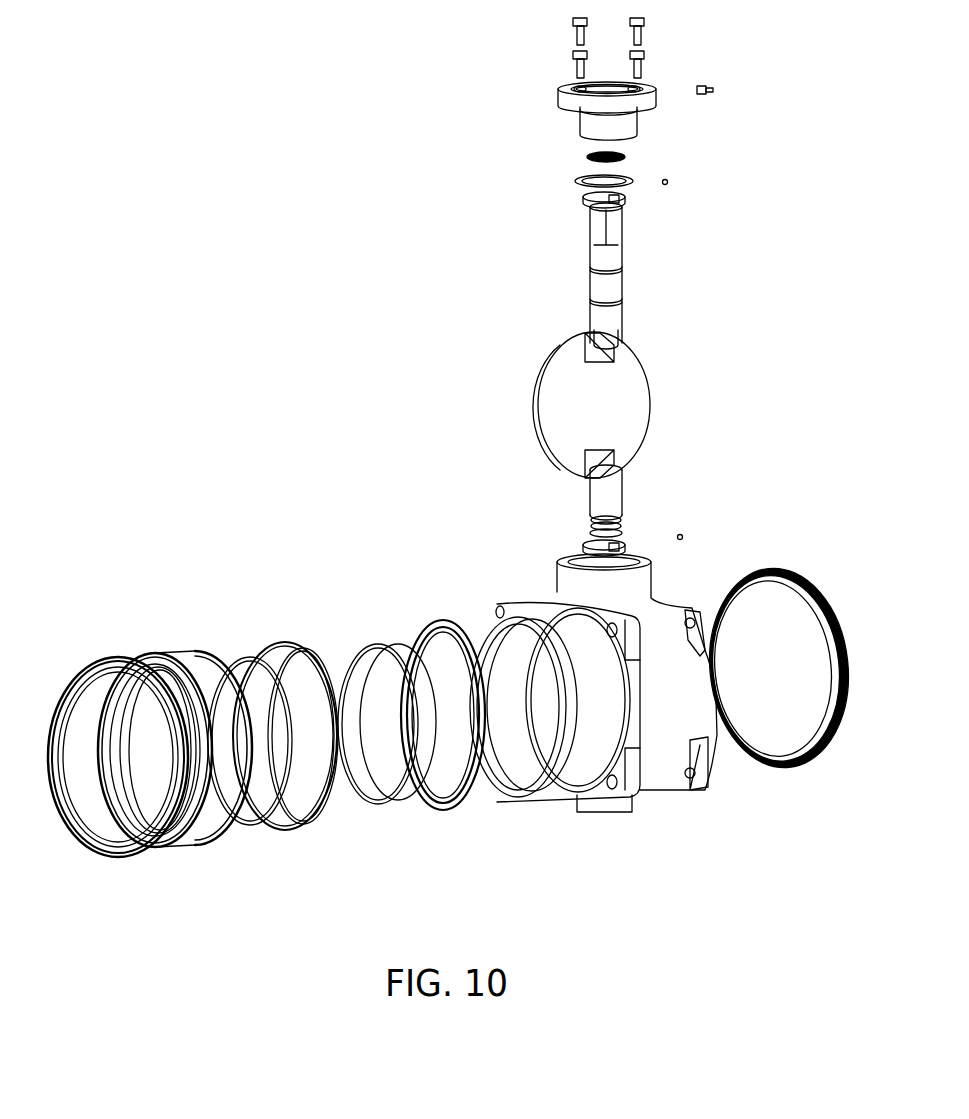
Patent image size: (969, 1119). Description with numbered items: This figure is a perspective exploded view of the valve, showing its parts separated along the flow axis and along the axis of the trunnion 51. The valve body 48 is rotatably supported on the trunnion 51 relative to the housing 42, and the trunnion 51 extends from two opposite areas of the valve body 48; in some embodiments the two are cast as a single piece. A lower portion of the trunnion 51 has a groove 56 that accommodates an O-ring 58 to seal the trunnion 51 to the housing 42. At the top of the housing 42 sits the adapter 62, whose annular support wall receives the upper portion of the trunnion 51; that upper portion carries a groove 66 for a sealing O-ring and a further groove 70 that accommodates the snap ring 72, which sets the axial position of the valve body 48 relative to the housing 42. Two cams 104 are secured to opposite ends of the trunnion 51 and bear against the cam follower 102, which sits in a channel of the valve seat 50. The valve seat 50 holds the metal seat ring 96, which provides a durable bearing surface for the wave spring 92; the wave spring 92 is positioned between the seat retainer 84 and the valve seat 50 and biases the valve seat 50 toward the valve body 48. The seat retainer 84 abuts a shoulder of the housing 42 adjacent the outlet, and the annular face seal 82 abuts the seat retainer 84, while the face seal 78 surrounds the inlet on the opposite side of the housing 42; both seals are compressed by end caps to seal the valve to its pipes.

The housing 42 is at (505, 606).
The valve body 48 is at (638, 392).
The valve seat 50 is at (427, 622).
The trunnion 51 is at (612, 256).
The groove 56 is at (592, 516).
The O-ring 58 is at (620, 532).
The adapter 62 is at (558, 94).
The groove 66 is at (623, 304).
The groove 70 is at (623, 272).
The snap ring 72 is at (630, 157).
The face seal 78 is at (756, 574).
The face seal 82 is at (78, 674).
The seat retainer 84 is at (142, 655).
The wave spring 92 is at (308, 644).
The seat ring 96 is at (378, 646).
The cam follower 102 is at (480, 620).
The cam 104 is at (626, 198).